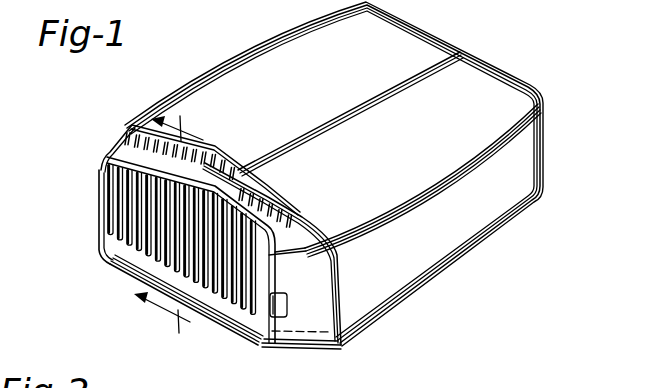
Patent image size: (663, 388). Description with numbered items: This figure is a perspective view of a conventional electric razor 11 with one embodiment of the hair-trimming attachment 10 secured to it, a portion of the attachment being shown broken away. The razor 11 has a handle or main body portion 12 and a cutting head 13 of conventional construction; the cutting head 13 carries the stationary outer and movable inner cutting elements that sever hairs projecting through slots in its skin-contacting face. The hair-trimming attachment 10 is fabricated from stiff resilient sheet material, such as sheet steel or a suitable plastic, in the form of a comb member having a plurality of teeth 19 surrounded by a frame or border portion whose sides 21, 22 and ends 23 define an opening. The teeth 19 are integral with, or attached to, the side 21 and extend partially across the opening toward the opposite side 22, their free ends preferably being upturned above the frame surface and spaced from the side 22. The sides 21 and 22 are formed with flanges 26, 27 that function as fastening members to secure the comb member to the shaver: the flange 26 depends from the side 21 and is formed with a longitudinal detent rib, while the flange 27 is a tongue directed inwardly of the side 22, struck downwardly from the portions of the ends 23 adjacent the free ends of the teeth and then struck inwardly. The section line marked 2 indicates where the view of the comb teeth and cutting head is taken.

The section line 2- 2 is at (168, 223).
The hair-trimming attachment 10 is at (183, 255).
The electric razor 11 is at (556, 209).
The handle or main body portion 12 is at (417, 146).
The cutting head 13 is at (118, 190).
The teeth 19 is at (231, 290).
The side of frame portion 21 is at (122, 266).
The side of frame portion 22 is at (253, 221).
The ends of frame portion 23 is at (99, 197).
The flange 26 is at (268, 344).
The flange 27 is at (275, 231).